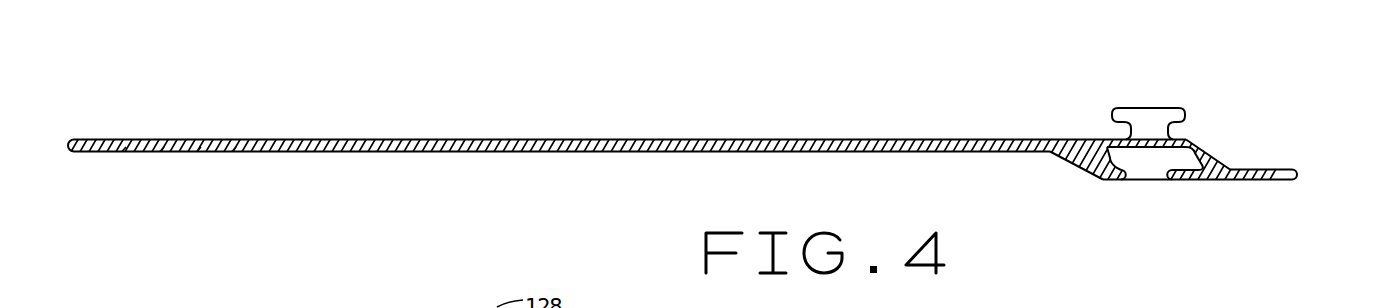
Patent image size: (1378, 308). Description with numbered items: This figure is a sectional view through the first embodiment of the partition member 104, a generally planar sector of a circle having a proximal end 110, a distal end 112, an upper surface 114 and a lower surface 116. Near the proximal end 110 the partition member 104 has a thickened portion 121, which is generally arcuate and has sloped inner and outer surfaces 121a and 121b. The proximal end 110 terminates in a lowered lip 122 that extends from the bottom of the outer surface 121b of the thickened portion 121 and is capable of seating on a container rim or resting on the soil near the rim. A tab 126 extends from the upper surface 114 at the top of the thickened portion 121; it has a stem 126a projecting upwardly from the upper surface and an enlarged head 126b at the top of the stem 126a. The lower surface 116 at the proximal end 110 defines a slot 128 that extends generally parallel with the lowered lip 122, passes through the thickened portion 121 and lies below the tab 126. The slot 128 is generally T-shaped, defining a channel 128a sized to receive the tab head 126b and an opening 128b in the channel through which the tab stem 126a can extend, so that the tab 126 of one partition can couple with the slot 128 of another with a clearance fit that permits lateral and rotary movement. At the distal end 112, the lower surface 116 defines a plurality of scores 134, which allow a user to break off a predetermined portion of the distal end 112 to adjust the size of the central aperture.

The partition member 104 is at (623, 137).
The proximal end 110 is at (1123, 137).
The distal end 112 is at (145, 138).
The upper surface 114 is at (752, 138).
The lower surface 116 is at (562, 152).
The thickened portion 121 is at (1096, 164).
The inner surface 121a is at (1085, 157).
The outer surface 121b is at (1205, 156).
The lowered lip 122 is at (1270, 169).
The tab 126 is at (1071, 79).
The stem 126a is at (1125, 134).
The enlarged head 126b is at (1111, 113).
The slot 128 is at (1166, 201).
The channel 128a is at (1168, 177).
The opening 128b is at (1128, 180).
The scores 134 is at (237, 152).